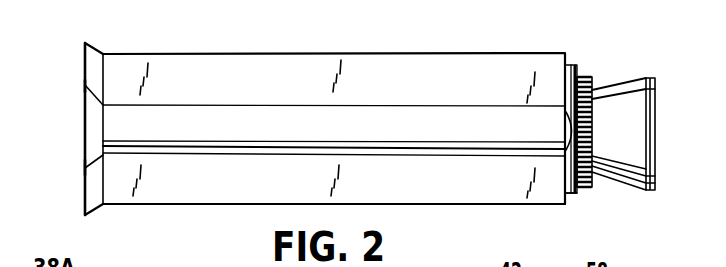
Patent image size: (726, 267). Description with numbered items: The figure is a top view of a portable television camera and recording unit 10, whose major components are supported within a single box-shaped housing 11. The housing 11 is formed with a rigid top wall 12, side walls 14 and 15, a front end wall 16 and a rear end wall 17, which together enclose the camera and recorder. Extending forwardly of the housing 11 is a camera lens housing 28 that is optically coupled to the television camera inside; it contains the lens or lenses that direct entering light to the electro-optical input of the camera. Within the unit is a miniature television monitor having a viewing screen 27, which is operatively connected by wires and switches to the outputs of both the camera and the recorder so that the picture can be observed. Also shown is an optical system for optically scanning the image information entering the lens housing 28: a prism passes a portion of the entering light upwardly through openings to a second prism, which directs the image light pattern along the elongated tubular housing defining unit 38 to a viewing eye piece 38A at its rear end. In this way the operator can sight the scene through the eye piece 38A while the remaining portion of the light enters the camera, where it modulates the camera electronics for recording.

The portable television camera and recording unit 10 is at (57, 32).
The box-shaped housing 11 is at (167, 204).
The top wall 12 is at (545, 66).
The side wall 14 is at (442, 53).
The side wall 15 is at (550, 204).
The front end wall 16 is at (568, 203).
The rear end wall 17 is at (100, 176).
The viewing screen 27 is at (84, 170).
The camera lens housing 28 is at (648, 76).
The elongated tubular housing defining unit 38 is at (322, 134).
The viewing eye piece 38A is at (84, 86).